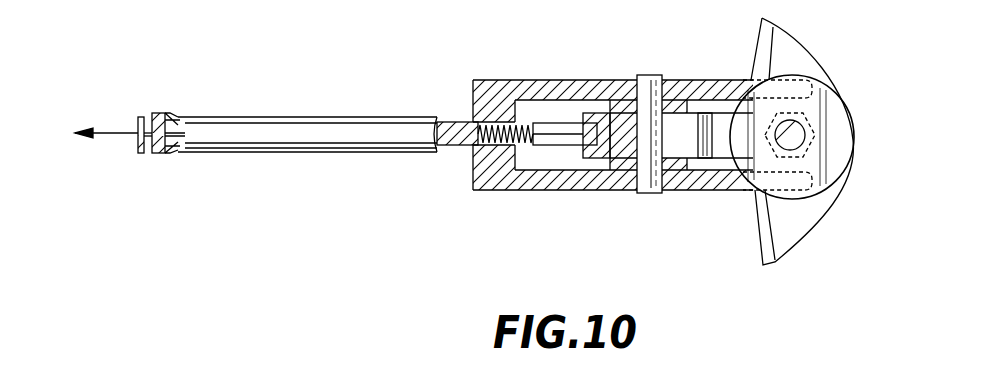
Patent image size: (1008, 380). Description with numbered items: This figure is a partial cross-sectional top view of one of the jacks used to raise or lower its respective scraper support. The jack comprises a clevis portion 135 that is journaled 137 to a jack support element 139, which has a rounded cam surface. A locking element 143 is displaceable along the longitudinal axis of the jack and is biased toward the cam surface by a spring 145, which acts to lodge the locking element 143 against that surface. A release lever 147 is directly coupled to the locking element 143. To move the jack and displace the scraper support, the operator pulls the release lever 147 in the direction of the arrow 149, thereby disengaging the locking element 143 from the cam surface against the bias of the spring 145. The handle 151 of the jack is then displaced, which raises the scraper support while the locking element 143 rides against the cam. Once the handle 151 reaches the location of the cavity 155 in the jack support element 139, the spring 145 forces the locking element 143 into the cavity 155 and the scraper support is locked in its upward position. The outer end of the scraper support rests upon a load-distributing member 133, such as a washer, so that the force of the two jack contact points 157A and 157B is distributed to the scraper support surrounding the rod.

The load-distributing member 133 is at (840, 127).
The clevis portion 135 is at (717, 78).
The journal 137 is at (653, 77).
The jack support element 139 is at (607, 117).
The locking element 143 is at (557, 137).
The spring 145 is at (490, 123).
The release lever 147 is at (148, 117).
The arrow 149 is at (107, 135).
The handle 151 is at (280, 123).
The cavity 155 is at (603, 145).
The jack contact point 157A is at (790, 85).
The jack contact point 157B is at (817, 193).